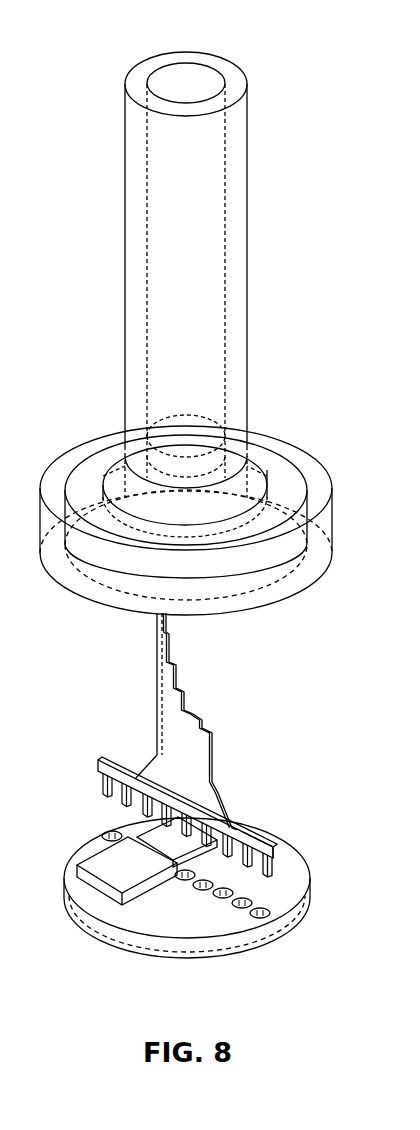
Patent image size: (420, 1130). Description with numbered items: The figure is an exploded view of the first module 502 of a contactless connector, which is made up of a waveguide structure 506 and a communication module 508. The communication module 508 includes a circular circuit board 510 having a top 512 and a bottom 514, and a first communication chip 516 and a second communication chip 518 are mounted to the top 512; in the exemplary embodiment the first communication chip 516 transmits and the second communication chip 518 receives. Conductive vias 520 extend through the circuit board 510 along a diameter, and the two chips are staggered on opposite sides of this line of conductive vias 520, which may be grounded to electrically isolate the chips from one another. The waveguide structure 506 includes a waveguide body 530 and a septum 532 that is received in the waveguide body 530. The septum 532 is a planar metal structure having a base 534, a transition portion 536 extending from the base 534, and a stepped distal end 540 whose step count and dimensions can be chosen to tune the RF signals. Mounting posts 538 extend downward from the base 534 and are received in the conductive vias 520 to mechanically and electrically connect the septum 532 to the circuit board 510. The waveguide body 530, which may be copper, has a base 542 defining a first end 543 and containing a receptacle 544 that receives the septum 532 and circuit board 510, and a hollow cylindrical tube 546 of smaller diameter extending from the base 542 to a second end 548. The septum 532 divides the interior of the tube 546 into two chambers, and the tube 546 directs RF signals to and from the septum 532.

The first module 502 is at (287, 92).
The waveguide structure 506 is at (90, 396).
The communication module 508 is at (312, 778).
The circuit board 510 is at (290, 875).
The top 512 is at (176, 920).
The bottom 514 is at (200, 958).
The first communication chip 516 is at (115, 870).
The second communication chip 518 is at (160, 840).
The conductive vias 520 is at (238, 916).
The waveguide body 530 is at (248, 369).
The septum 532 is at (202, 767).
The base 534 is at (250, 843).
The transition portion 536 is at (220, 795).
The mounting posts 538 is at (267, 873).
The distal end 540 is at (193, 710).
The base 542 is at (322, 542).
The first end 543 is at (297, 587).
The receptacle 544 is at (240, 490).
The tube 546 is at (248, 270).
The second end 548 is at (228, 72).